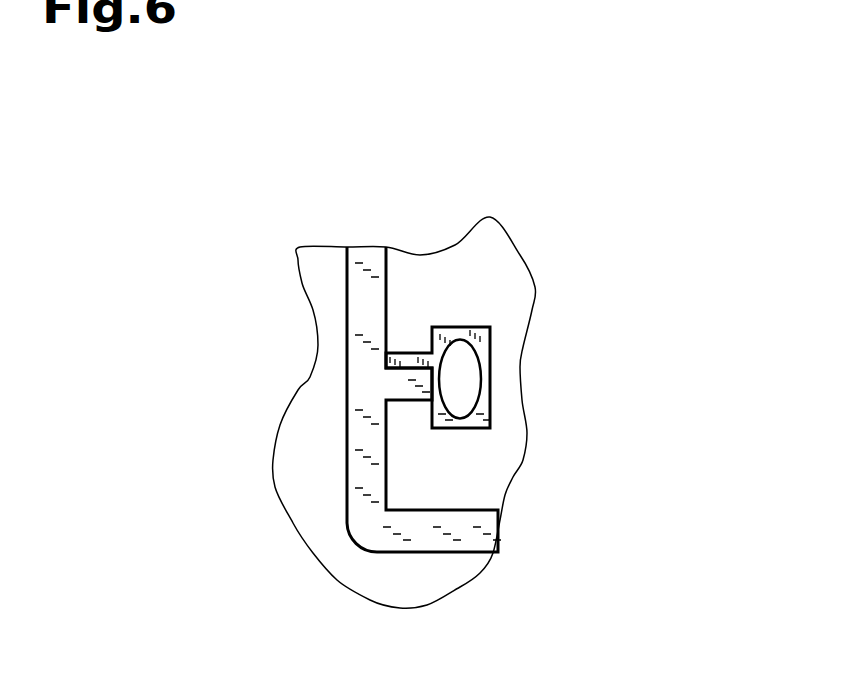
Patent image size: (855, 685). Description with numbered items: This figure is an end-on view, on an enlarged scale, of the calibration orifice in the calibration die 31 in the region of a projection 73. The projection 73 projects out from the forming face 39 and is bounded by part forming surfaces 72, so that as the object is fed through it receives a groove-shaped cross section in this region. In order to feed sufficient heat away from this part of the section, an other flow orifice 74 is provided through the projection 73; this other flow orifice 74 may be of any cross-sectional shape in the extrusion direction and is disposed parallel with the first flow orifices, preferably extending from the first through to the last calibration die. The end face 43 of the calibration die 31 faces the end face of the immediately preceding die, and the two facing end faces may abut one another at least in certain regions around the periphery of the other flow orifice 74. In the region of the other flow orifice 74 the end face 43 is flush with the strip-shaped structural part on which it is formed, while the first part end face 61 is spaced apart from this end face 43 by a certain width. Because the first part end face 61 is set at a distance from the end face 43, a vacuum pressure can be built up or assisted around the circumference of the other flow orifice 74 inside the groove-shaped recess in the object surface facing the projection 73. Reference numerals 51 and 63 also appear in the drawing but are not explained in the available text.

The calibration die 31 is at (258, 516).
The forming face 39 is at (388, 300).
The end face 43 is at (443, 333).
The sealing body 51 is at (325, 311).
The first part end face 61 is at (363, 309).
The outer surface 63 is at (322, 350).
The part forming surface 72 is at (475, 325).
The projection 73 is at (515, 352).
The other flow orifice 74 is at (471, 398).